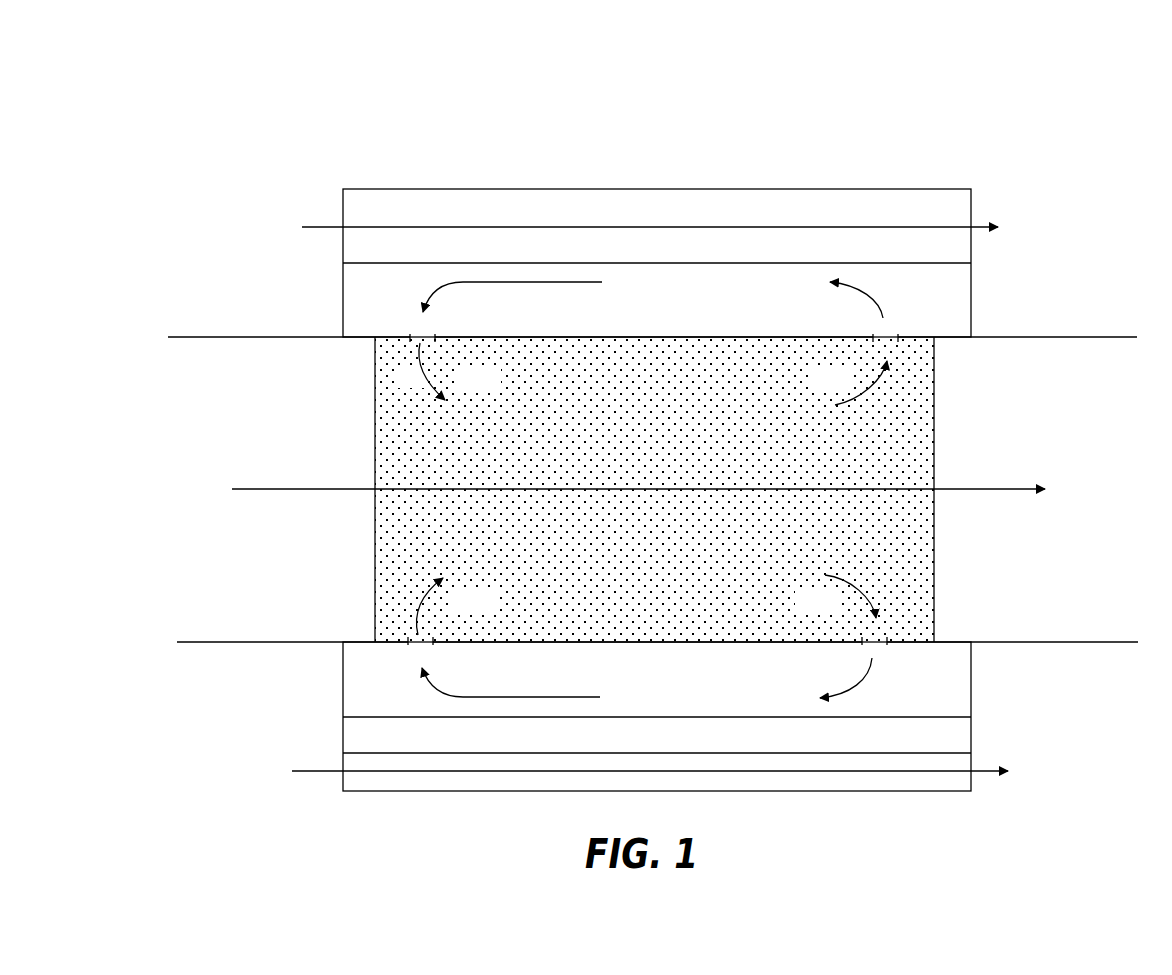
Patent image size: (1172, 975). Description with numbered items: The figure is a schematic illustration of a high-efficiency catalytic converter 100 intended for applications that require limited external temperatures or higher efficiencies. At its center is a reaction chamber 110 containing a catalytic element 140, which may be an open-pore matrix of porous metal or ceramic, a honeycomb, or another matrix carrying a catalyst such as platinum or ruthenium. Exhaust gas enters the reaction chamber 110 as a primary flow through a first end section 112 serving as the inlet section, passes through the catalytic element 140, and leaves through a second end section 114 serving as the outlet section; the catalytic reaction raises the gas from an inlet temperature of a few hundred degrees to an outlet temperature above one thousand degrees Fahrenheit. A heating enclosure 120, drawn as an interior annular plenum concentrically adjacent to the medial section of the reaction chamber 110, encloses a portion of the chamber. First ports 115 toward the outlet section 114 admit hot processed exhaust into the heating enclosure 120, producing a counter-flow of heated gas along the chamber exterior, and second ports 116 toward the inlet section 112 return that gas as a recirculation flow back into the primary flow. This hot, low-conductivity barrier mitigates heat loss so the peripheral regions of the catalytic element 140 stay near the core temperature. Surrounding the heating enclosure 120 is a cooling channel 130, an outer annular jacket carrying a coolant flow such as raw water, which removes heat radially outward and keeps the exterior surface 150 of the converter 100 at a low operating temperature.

The catalytic converter 100 is at (860, 123).
The reaction chamber 110 is at (333, 365).
The first end section 112 is at (238, 643).
The second end section 114 is at (1032, 643).
The first ports 115 is at (873, 340).
The second ports 116 is at (435, 340).
The heating enclosure 120 is at (352, 284).
The cooling channel 130 is at (352, 206).
The catalytic element 140 is at (393, 442).
The exterior surface 150 is at (945, 188).